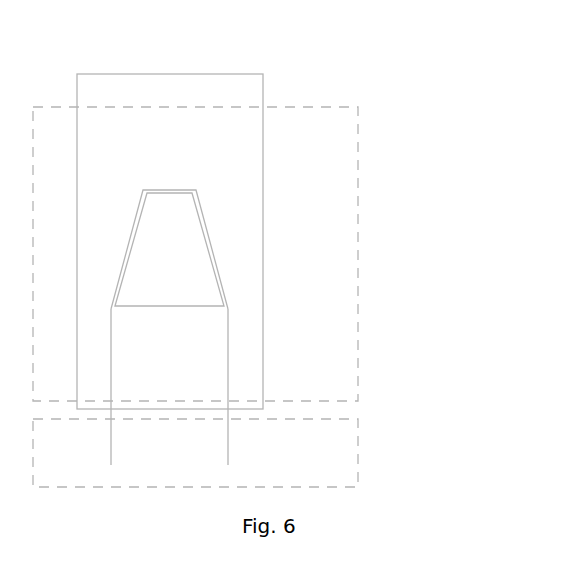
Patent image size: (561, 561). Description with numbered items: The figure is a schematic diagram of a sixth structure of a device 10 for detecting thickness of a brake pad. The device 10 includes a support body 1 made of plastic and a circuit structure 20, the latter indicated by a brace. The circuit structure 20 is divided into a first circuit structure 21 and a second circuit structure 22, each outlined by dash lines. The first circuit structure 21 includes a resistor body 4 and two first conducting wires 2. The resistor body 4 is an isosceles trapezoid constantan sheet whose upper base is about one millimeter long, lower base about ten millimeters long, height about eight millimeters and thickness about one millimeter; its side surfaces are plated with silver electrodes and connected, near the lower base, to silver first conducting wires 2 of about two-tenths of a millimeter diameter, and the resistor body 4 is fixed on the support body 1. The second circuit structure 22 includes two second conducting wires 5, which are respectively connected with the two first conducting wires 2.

The device for detecting thickness of a brake pad 10 is at (177, 32).
The support body 1 is at (263, 74).
The resistor body 4 is at (168, 190).
The first conducting wire 2 is at (111, 348).
The second conducting wire 5 is at (111, 441).
The circuit structure 20 is at (269, 297).
The first circuit structure 21 is at (358, 254).
The second circuit structure 22 is at (234, 453).